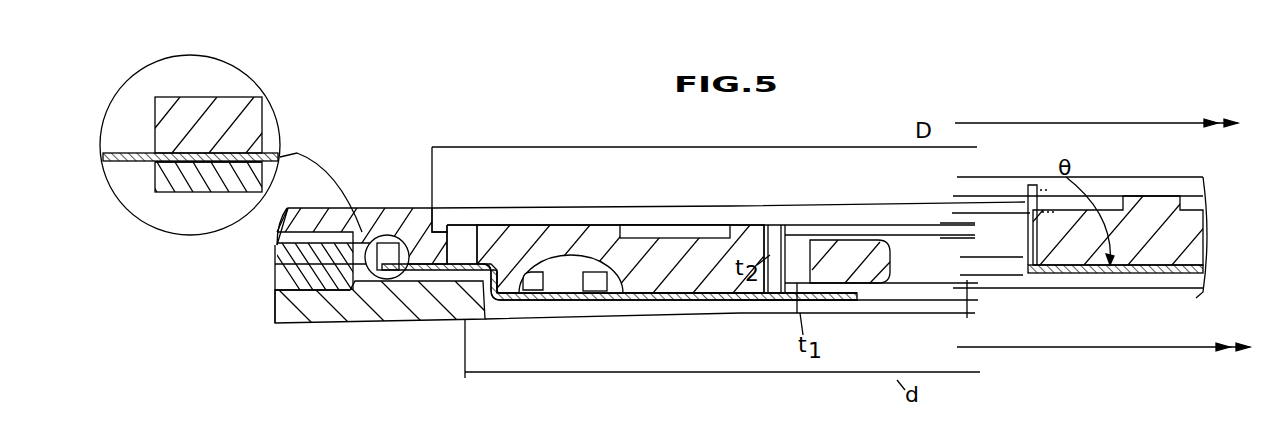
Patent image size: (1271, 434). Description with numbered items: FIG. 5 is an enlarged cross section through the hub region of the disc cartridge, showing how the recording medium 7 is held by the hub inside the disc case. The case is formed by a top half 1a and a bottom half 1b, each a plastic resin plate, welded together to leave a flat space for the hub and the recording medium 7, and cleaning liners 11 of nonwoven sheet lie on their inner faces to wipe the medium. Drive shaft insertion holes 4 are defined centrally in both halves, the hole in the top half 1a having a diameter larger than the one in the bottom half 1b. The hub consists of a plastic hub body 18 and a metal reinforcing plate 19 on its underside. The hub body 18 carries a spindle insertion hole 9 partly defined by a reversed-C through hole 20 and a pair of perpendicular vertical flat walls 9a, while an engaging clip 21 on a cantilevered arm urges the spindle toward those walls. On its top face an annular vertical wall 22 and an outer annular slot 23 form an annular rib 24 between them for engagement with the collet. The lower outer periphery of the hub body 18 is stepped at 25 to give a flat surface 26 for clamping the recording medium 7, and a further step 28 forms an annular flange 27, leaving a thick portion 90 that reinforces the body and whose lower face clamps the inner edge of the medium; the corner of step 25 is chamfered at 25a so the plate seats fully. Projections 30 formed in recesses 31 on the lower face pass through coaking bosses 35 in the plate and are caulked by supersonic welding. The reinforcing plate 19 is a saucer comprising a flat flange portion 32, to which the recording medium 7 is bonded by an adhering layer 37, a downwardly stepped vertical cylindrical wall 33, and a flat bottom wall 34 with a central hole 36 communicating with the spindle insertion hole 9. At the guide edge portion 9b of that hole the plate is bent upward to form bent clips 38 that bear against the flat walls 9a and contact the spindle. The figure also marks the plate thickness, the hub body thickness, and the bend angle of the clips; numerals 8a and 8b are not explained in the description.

The top half 1a is at (318, 207).
The bottom half 1b is at (305, 323).
The drive shaft insertion hole 4 is at (433, 222).
The recording medium 7 is at (276, 266).
The upper plate 8a is at (607, 225).
The lower plate 8b is at (640, 300).
The spindle insertion hole 9 is at (1064, 255).
The vertical flat walls 9a is at (1020, 215).
The guide edge portion 9b is at (865, 301).
The cleaning liners 11 is at (280, 244).
The hub body 18 is at (590, 237).
The reinforcing plate 19 is at (690, 300).
The through hole 20 is at (783, 240).
The engaging clip 21 is at (843, 248).
The annular vertical wall 22 is at (1115, 198).
The annular slot 23 is at (690, 232).
The annular rib 24 is at (752, 225).
The stepped portion 25 is at (470, 255).
The chamfered portion 25a is at (497, 305).
The flat surface 26 is at (414, 270).
The annular flange 27 is at (398, 248).
The stepped portion 28 is at (448, 235).
The projections 30 is at (590, 290).
The recesses 31 is at (596, 298).
The flange portion 32 is at (390, 270).
The vertical cylindrical wall 33 is at (490, 300).
The bottom wall 34 is at (745, 300).
The coaking bosses 35 is at (532, 272).
The hole 36 is at (970, 315).
The adhering layer 37 is at (182, 165).
The bent clips 38 is at (1022, 267).
The thick portion 90 is at (466, 258).